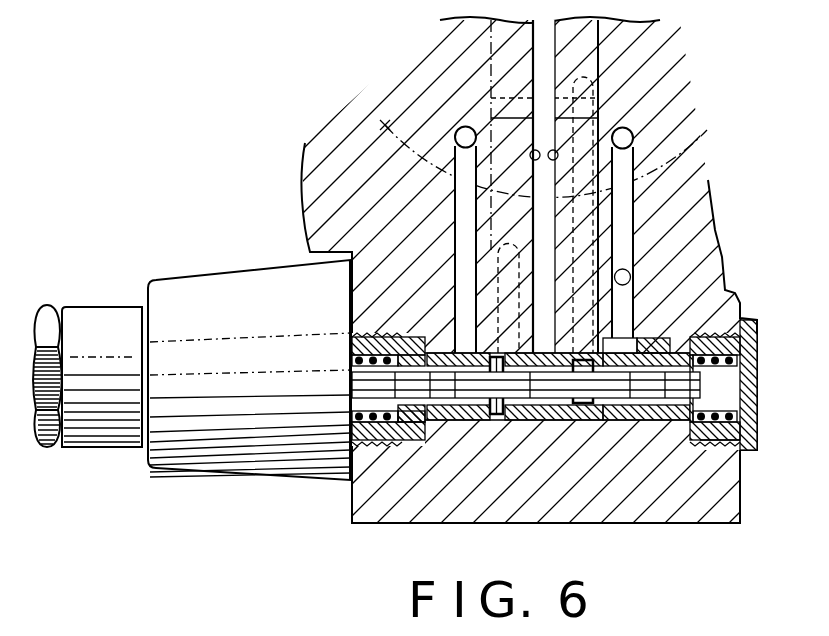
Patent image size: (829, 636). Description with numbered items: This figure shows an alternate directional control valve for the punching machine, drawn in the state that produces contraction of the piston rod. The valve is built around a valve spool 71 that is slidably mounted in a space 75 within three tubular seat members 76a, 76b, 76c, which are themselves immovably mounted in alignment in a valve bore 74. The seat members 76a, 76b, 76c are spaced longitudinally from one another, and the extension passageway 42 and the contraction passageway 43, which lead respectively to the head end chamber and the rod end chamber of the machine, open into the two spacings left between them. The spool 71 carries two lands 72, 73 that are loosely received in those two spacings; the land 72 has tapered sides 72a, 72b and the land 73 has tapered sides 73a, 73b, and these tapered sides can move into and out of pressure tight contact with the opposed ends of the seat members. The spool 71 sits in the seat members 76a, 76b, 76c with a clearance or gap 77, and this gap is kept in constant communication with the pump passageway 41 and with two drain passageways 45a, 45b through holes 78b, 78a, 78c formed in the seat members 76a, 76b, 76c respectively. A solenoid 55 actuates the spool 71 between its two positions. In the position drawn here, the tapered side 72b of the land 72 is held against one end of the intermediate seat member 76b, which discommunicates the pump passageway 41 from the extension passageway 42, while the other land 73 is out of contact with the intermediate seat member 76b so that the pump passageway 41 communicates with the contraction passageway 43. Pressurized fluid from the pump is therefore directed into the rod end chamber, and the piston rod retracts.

The pump passageway 41 is at (492, 135).
The extension passageway 42 is at (634, 180).
The contraction passageway 43 is at (497, 278).
The drain passageway 45a is at (633, 146).
The drain passageway 45b is at (455, 193).
The solenoid 55 is at (197, 292).
The valve spool 71 is at (555, 400).
The land 72 is at (613, 420).
The tapered side 72a is at (712, 455).
The tapered side 72b is at (577, 420).
The land 73 is at (497, 420).
The tapered side 73a is at (575, 420).
The tapered side 73b is at (540, 420).
The valve bore 74 is at (548, 420).
The space 75 is at (457, 420).
The tubular seat member 76a is at (680, 430).
The intermediate tubular seat member 76b is at (690, 432).
The tubular seat member 76c is at (475, 420).
The clearance gap 77 is at (631, 278).
The hole 78a is at (625, 348).
The hole 78b is at (545, 353).
The hole 78c is at (455, 345).